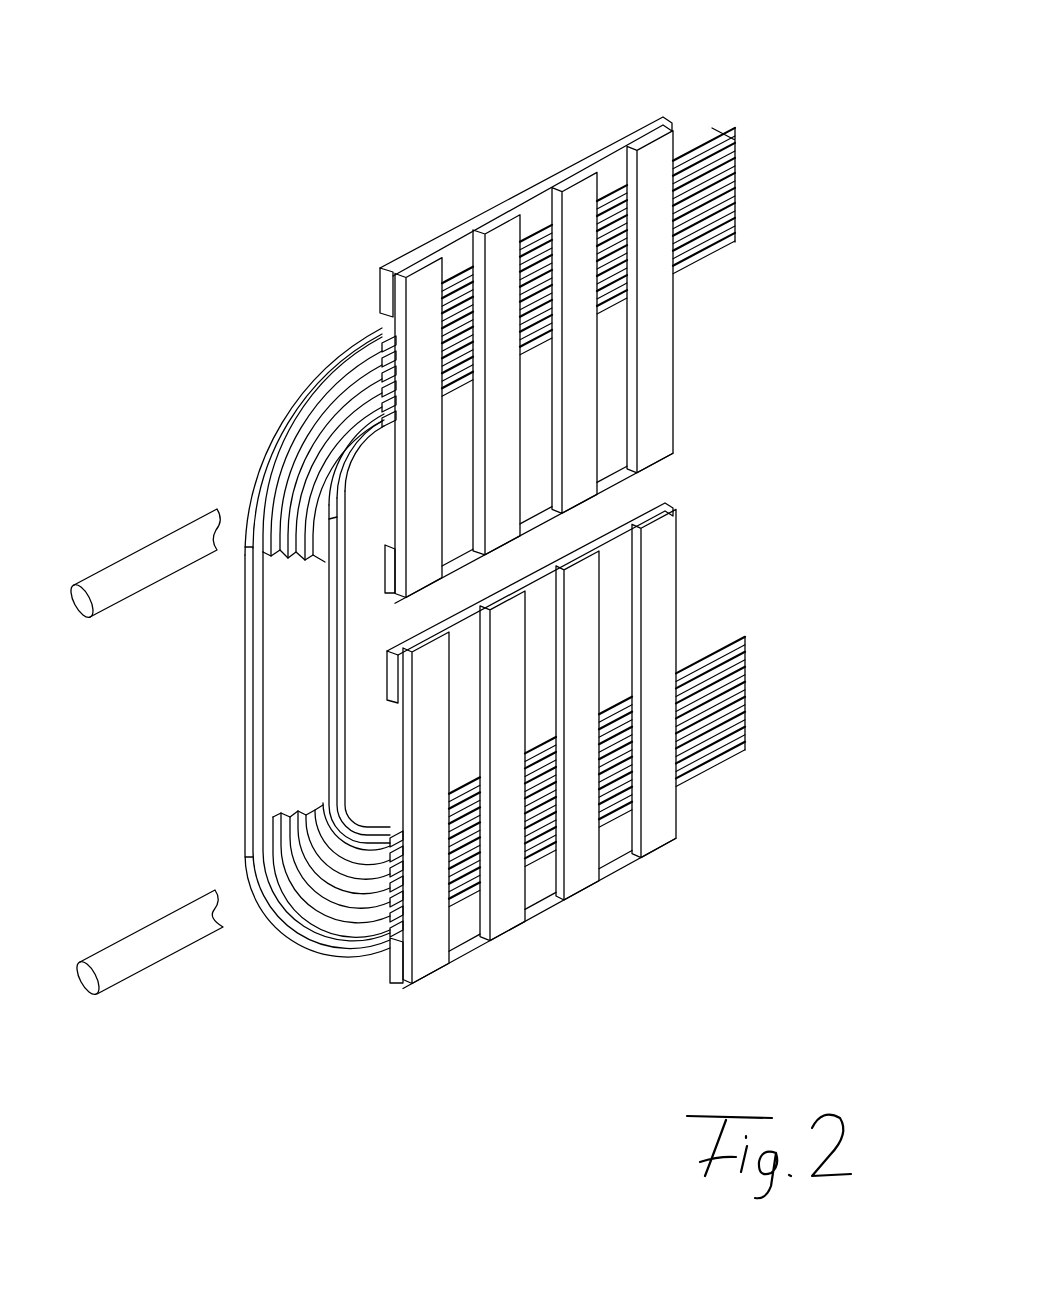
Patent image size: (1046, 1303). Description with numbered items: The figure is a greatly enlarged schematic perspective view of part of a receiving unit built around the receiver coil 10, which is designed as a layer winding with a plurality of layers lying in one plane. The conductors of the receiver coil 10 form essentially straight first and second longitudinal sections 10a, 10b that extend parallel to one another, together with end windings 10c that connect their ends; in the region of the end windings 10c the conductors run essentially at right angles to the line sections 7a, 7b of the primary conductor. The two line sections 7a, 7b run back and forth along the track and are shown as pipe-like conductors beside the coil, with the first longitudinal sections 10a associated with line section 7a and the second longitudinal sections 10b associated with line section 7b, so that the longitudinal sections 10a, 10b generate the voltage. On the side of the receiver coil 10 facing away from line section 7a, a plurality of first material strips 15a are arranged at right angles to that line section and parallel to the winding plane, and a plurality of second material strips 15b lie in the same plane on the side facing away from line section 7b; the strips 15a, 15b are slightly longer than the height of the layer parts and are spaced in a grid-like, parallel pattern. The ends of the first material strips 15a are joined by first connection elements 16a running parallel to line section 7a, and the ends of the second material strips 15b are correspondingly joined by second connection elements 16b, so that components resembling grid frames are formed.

The receiver coil 10 is at (851, 199).
The first longitudinal sections 10a is at (735, 150).
The second longitudinal sections 10b is at (745, 640).
The end windings 10c is at (333, 738).
The first material strips 15a is at (578, 380).
The second material strips 15b is at (580, 870).
The first connection elements 16a is at (534, 218).
The second connection elements 16b is at (612, 570).
The line section 7a is at (133, 565).
The line section 7b is at (138, 952).